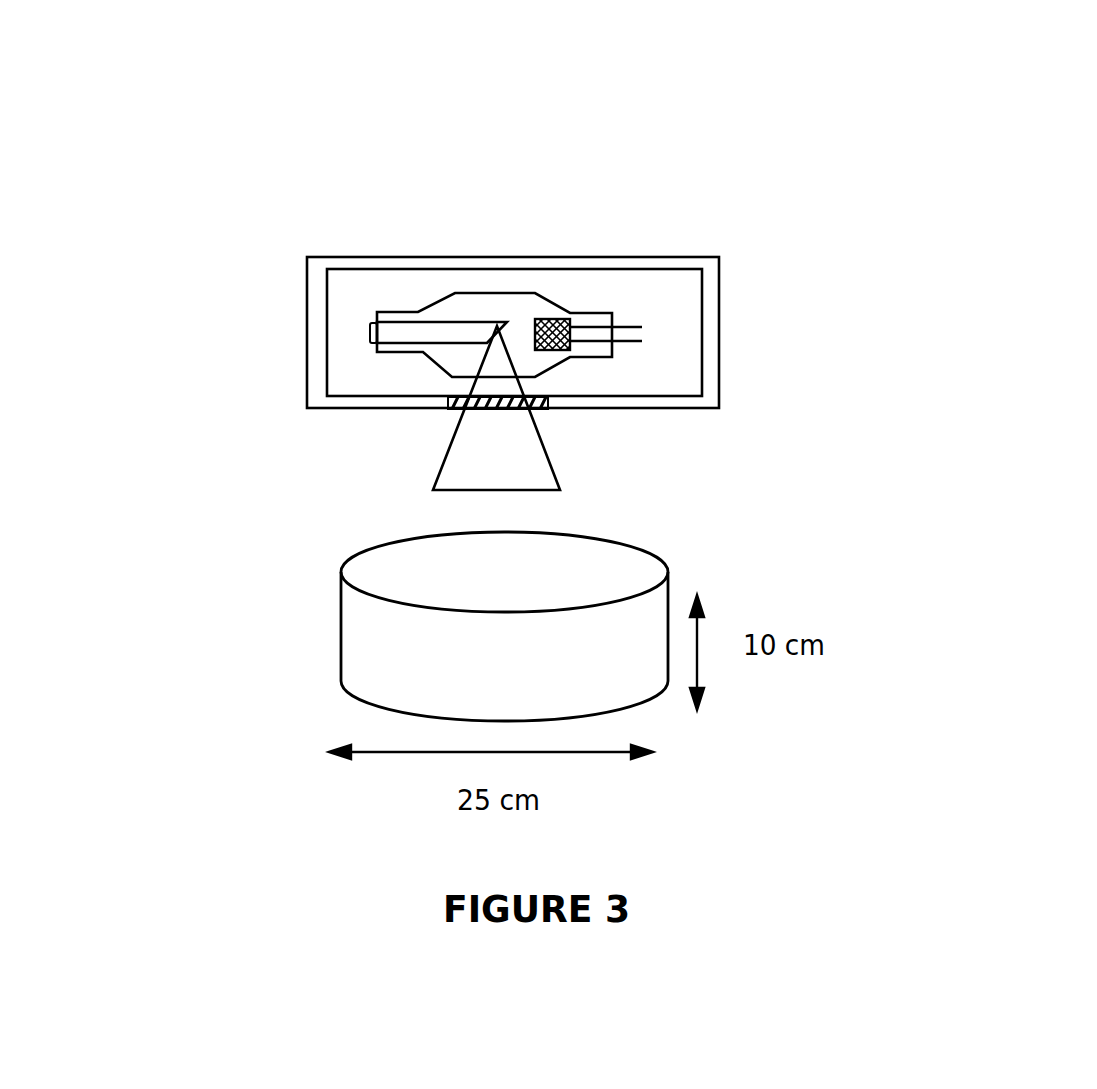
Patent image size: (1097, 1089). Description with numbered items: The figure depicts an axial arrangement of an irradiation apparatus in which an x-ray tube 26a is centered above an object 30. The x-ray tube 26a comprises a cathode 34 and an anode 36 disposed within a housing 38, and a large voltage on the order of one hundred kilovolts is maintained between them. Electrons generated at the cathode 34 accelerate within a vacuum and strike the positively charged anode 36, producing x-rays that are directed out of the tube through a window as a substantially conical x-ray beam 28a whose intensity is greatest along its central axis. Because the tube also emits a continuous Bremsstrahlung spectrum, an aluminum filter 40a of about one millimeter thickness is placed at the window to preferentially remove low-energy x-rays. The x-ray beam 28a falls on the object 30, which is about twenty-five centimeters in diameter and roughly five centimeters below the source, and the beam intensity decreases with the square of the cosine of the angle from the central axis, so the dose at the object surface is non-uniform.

The x-ray tube 26a is at (497, 283).
The housing 38 is at (443, 263).
The cathode 34 is at (567, 320).
The anode 36 is at (458, 332).
The aluminum filter 40a is at (507, 410).
The x-ray beam 28a is at (510, 443).
The object 30 is at (367, 622).